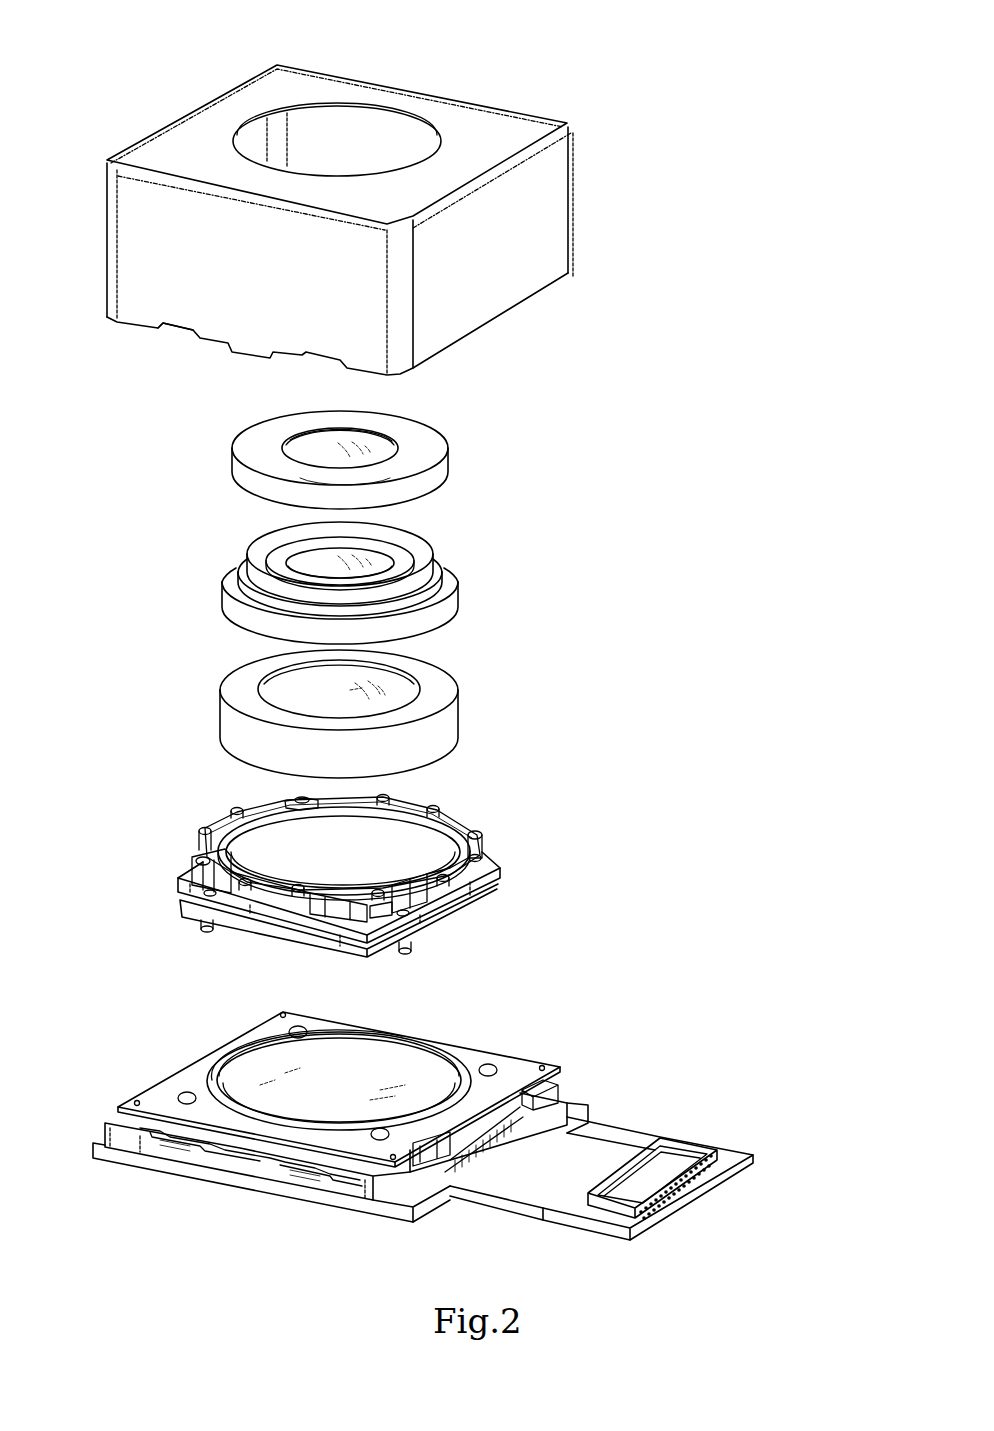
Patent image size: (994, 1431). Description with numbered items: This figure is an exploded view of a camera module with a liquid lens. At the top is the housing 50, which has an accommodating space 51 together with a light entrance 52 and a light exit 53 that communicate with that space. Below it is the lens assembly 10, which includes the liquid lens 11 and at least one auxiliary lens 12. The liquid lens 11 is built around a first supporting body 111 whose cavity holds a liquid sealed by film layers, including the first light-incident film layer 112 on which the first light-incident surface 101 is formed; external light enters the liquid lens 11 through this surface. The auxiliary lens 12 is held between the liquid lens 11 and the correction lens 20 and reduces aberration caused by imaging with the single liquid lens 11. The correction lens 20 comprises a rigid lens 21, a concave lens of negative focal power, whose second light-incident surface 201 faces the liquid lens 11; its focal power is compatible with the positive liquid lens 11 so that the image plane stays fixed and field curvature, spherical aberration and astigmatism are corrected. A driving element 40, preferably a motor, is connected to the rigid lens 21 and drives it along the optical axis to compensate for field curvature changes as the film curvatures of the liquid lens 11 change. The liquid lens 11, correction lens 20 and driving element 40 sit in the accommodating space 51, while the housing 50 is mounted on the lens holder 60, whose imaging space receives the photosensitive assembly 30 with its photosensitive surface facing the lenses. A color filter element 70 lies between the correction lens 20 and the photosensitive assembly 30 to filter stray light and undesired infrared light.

The lens assembly 10 is at (414, 511).
The liquid lens 11 is at (379, 443).
The first light-incident surface 101 is at (315, 447).
The first supporting body 111 is at (425, 448).
The first light-incident film layer 112 is at (373, 443).
The auxiliary lens 12 is at (393, 565).
The correction lens 20 is at (382, 703).
The second light-incident surface 201 is at (315, 698).
The rigid lens 21 is at (390, 688).
The photosensitive assembly 30 is at (270, 1188).
The driving element 40 is at (500, 852).
The housing 50 is at (345, 196).
The accommodating space 51 is at (303, 135).
The light entrance 52 is at (317, 136).
The light exit 53 is at (181, 335).
The lens holder 60 is at (213, 1158).
The color filter element 70 is at (262, 1090).